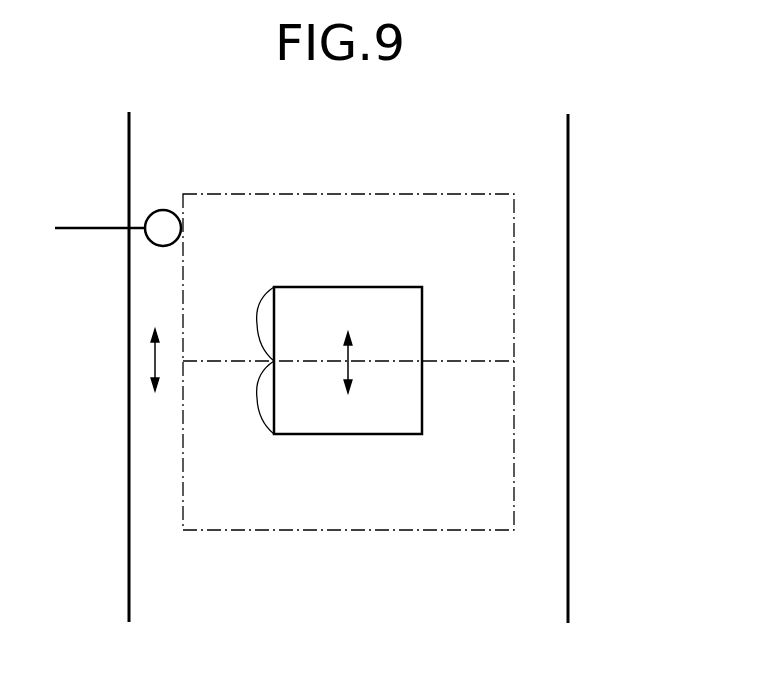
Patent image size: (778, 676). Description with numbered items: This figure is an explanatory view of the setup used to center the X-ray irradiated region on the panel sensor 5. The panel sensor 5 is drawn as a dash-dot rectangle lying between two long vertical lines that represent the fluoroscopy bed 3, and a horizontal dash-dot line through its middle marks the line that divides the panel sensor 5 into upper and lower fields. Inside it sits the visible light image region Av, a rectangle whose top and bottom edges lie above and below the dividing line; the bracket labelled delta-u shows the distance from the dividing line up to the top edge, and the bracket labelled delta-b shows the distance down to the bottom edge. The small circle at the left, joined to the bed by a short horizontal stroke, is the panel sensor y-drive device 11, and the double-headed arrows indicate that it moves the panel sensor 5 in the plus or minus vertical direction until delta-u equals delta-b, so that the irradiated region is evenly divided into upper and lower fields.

The fluoroscopy bed 3 is at (568, 167).
The panel sensor y-drive device 11 is at (164, 210).
The panel sensor 5 is at (362, 194).
The visible light image region Av is at (368, 434).